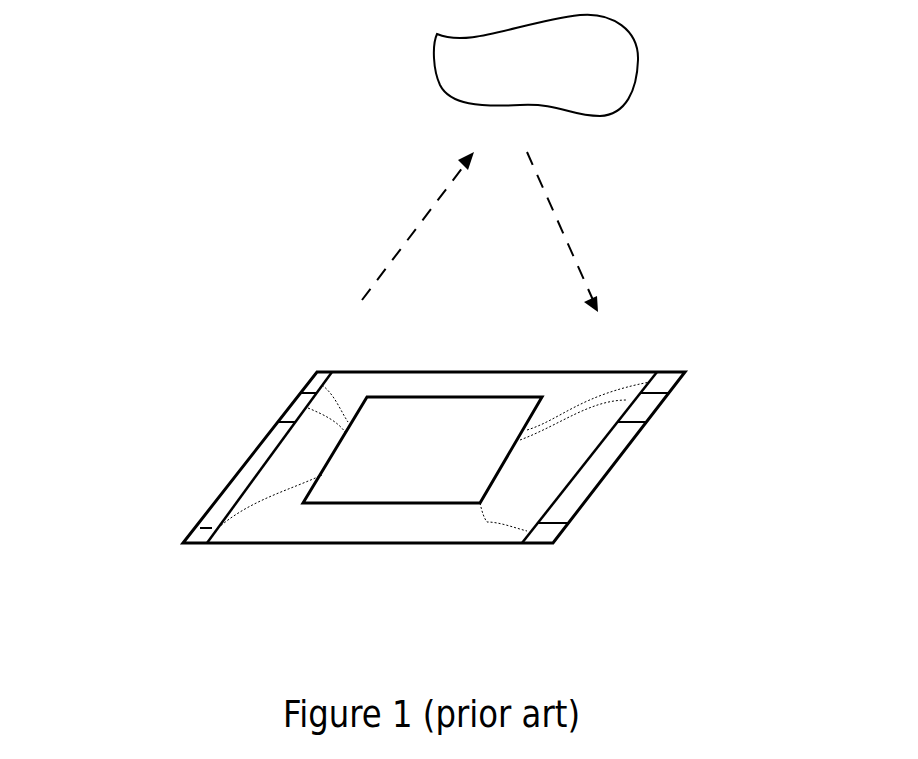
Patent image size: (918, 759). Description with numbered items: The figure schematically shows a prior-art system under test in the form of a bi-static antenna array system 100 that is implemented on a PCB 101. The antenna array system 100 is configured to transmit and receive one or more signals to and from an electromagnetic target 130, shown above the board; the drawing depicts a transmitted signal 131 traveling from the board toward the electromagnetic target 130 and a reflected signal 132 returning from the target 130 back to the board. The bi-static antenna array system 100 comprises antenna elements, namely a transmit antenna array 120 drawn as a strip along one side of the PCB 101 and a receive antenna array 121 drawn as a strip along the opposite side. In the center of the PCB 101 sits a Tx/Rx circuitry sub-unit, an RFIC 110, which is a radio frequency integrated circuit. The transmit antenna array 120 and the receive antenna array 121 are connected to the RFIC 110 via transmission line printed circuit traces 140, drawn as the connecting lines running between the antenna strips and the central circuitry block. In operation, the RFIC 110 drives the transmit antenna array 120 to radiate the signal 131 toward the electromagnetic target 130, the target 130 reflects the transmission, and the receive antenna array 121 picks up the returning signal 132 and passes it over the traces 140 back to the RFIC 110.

The bi-static antenna array system 100 is at (207, 457).
The PCB 101 is at (458, 397).
The RFIC 110 is at (503, 460).
The transmit antenna array 120 is at (287, 405).
The receive antenna array 121 is at (653, 413).
The electromagnetic target 130 is at (432, 62).
The signal 131 is at (413, 231).
The signal 132 is at (563, 223).
The transmission line printed circuit traces 140 is at (354, 396).